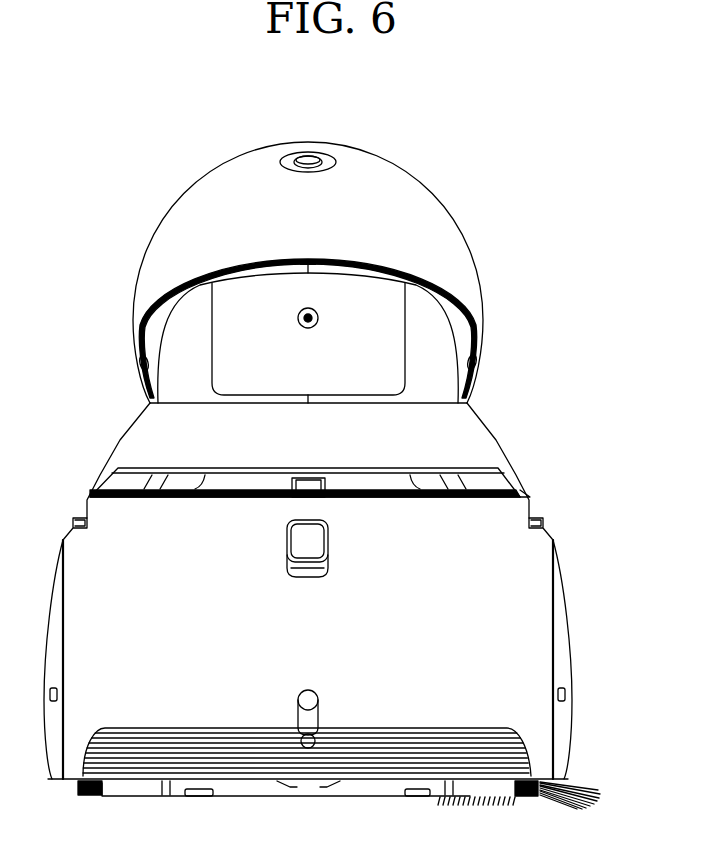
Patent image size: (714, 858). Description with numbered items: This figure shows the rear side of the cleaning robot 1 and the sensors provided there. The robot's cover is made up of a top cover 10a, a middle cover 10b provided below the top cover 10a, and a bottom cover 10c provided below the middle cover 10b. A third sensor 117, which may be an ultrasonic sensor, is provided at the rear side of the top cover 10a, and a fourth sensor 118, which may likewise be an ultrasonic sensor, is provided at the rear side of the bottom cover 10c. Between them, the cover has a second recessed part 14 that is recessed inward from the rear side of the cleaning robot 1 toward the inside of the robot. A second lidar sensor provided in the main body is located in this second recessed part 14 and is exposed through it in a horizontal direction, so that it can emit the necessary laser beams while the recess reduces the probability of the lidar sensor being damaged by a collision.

The cleaning robot 1 is at (96, 126).
The top cover 10a is at (262, 160).
The third sensor 117 is at (318, 318).
The middle cover 10b is at (485, 432).
The second recessed part 14 is at (512, 473).
The bottom cover 10c is at (538, 622).
The fourth sensor 118 is at (308, 749).